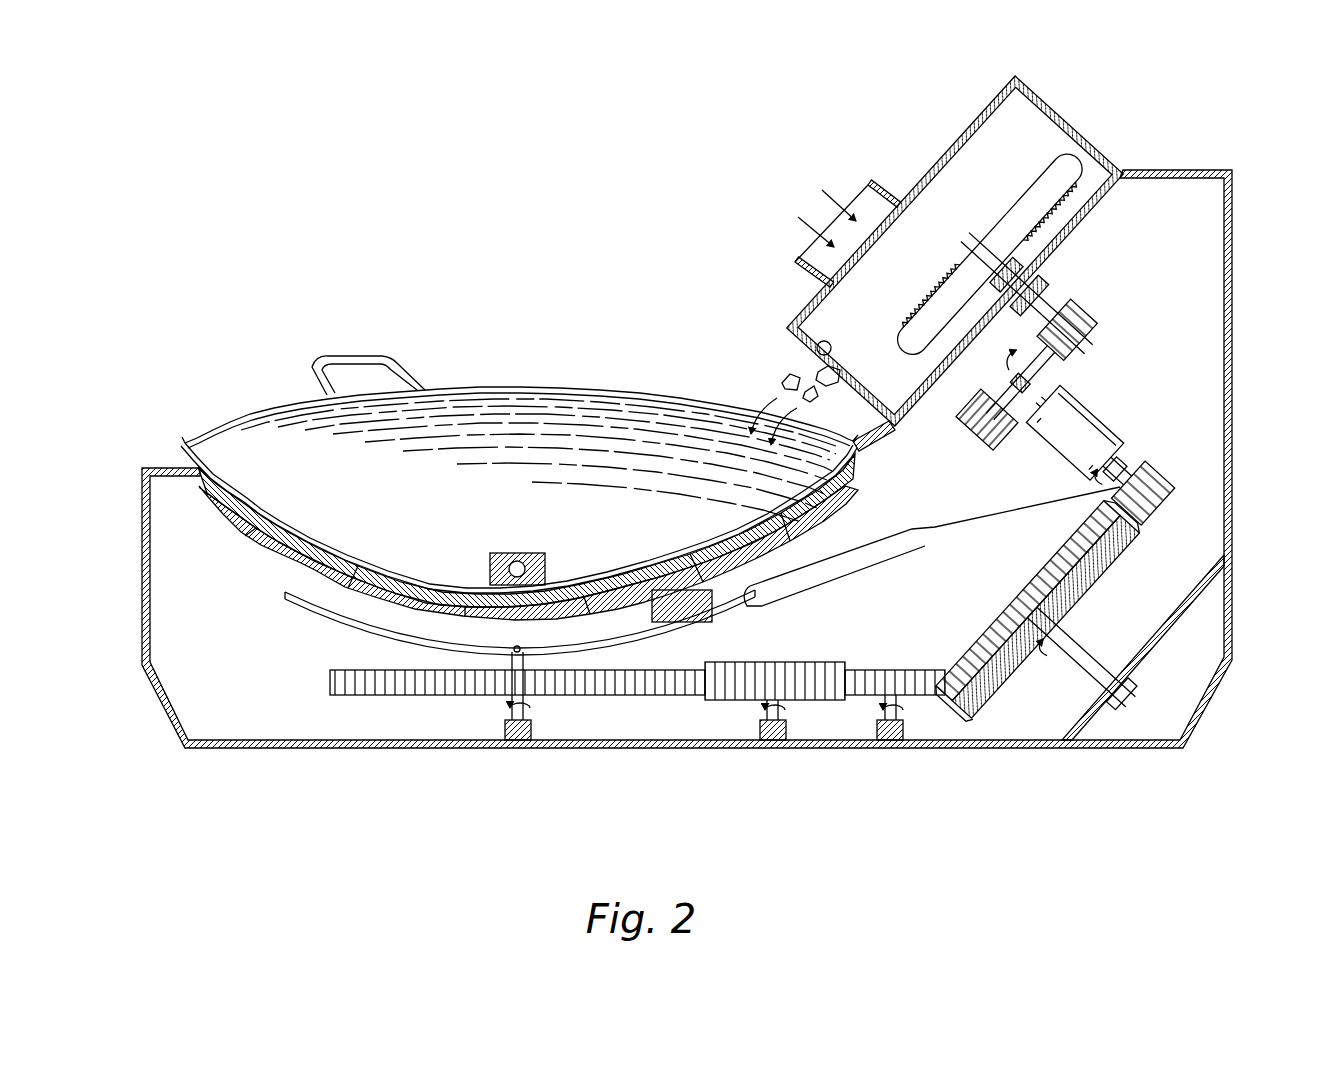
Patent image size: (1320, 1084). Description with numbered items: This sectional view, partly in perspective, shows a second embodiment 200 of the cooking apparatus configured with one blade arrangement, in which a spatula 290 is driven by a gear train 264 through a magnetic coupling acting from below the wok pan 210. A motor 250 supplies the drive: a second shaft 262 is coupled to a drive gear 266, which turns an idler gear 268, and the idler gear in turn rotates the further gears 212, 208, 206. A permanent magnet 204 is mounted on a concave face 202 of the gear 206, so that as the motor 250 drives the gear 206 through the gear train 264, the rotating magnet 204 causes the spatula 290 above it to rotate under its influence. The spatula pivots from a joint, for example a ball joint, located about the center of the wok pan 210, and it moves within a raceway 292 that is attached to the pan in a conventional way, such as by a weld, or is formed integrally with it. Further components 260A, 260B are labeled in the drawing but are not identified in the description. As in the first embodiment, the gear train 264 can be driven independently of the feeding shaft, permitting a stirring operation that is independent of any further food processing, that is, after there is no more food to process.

The cooking apparatus 200 is at (452, 250).
The concave face 202 is at (302, 600).
The permanent magnet 204 is at (642, 622).
The gear 206 is at (396, 696).
The gear 208 is at (812, 701).
The wok pan 210 is at (259, 500).
The gear 212 is at (917, 698).
The motor 250 is at (1083, 440).
The gear 260A is at (1029, 372).
The drive shaft 260B is at (1027, 293).
The second shaft 262 is at (1109, 471).
The gear train 264 is at (912, 529).
The drive gear 266 is at (1143, 493).
The idler gear 268 is at (1077, 645).
The spatula 290 is at (603, 556).
The raceway 292 is at (518, 553).